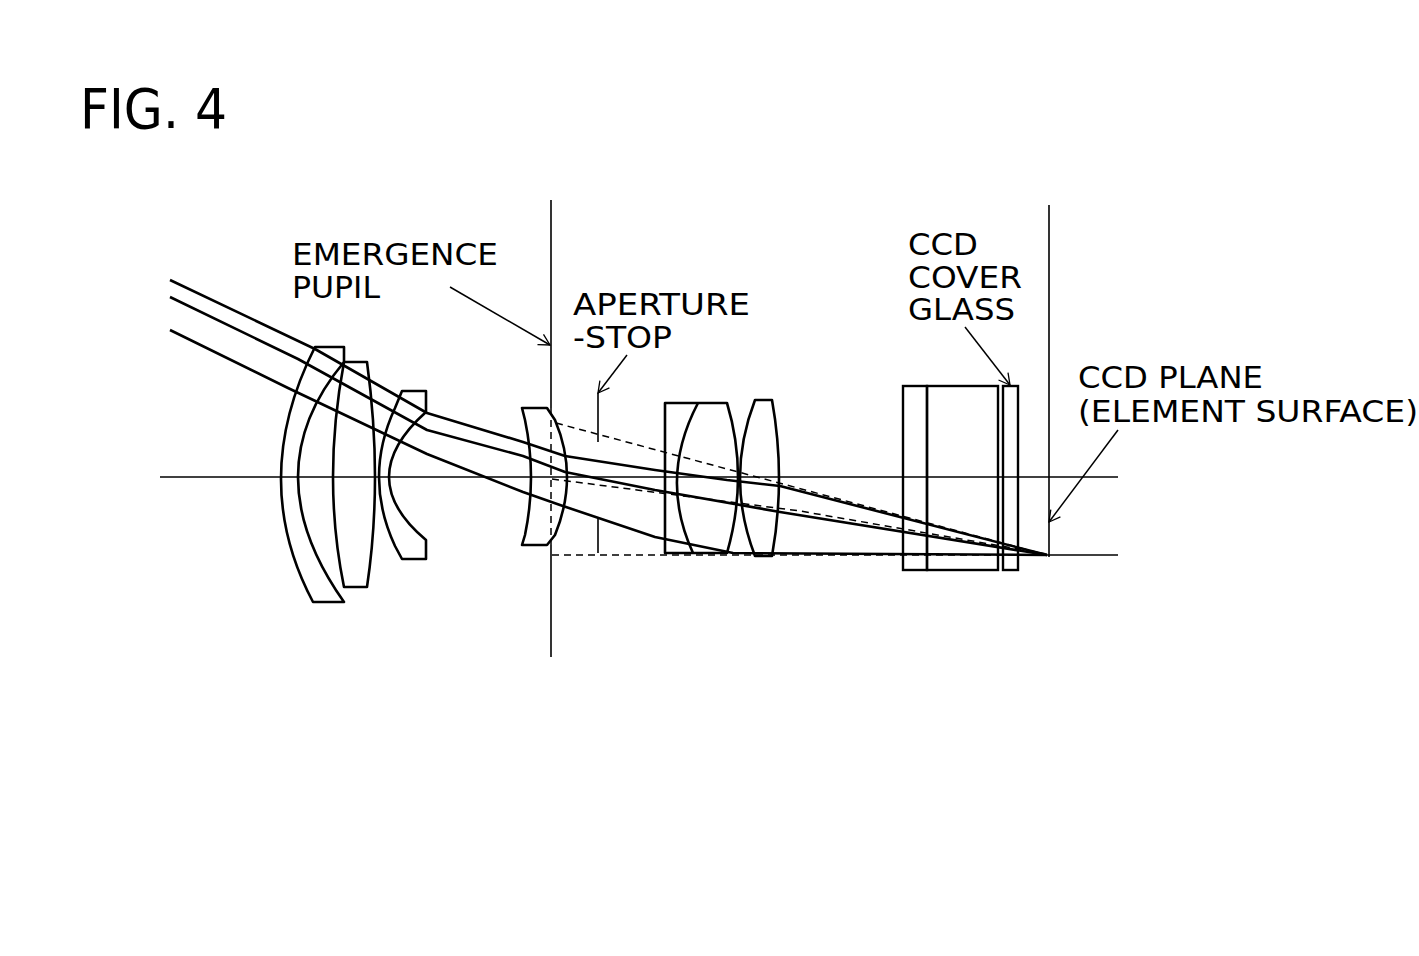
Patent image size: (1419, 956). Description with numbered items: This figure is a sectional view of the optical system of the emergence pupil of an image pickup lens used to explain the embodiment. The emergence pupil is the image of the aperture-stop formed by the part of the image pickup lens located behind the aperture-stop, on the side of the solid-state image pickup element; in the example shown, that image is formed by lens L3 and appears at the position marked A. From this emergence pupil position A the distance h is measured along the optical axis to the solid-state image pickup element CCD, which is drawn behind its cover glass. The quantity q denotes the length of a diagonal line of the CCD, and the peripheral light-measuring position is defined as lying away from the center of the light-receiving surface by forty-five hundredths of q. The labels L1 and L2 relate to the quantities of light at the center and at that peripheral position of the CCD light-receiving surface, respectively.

The quantity of light at center position L1 is at (435, 652).
The quantity of light at peripheral position L2 is at (544, 560).
The lens L3 is at (722, 556).
The emergence pupil position A is at (553, 410).
The distance from emergence pupil to solid-state image pickup element h is at (1049, 212).
The diagonal line length of solid-state image pickup element q is at (1105, 477).